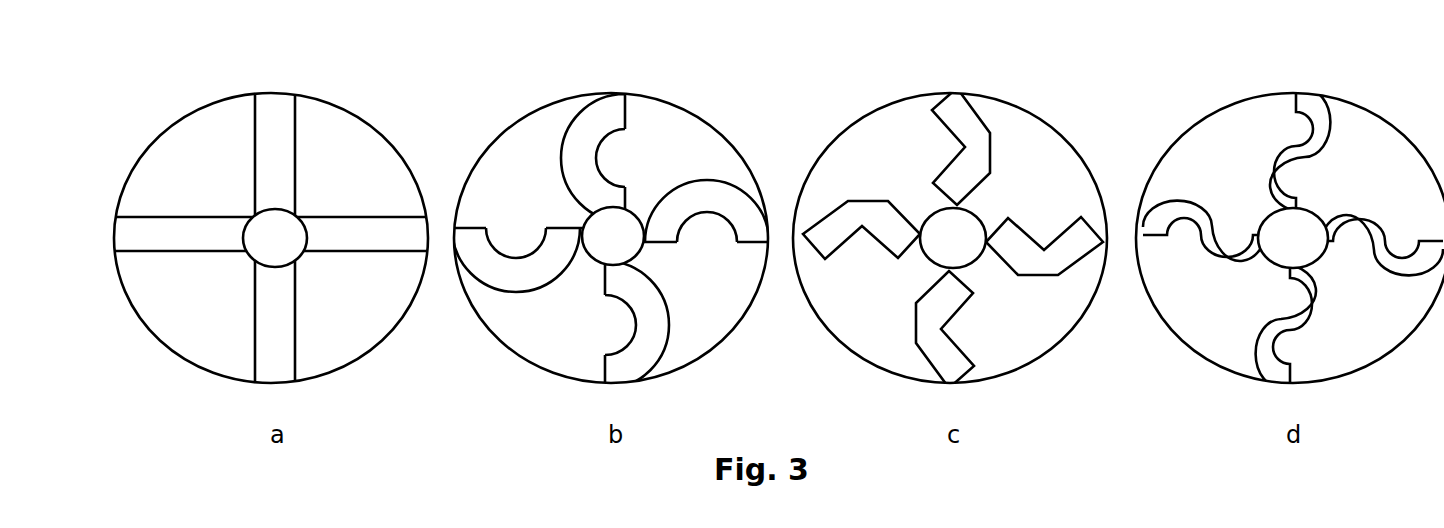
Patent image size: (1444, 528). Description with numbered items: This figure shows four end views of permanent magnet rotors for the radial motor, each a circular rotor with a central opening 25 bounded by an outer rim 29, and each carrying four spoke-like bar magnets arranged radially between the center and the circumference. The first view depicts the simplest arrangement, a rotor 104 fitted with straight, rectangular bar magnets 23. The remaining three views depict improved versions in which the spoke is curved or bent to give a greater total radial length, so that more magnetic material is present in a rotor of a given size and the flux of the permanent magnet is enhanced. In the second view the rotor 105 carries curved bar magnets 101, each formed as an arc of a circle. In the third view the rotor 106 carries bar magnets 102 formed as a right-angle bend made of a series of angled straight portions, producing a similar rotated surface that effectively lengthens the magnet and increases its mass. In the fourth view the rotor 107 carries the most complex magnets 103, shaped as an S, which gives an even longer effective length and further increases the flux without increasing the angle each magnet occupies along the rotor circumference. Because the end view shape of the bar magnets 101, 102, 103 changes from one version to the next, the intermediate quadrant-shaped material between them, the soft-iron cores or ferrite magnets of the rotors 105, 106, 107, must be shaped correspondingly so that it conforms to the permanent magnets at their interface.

The straight radial channel 23 is at (275, 155).
The circumferential outer wall 29 is at (326, 100).
The central opening 25 is at (298, 265).
The permanent bar magnet 101 is at (648, 312).
The permanent bar magnet 102 is at (1020, 232).
The permanent bar magnet 103 is at (1292, 318).
The disc insert with straight channels 104 is at (261, 211).
The intermediate quadrant-shaped material 105 is at (608, 217).
The intermediate quadrant-shaped material 106 is at (948, 210).
The intermediate quadrant-shaped material 107 is at (1272, 216).